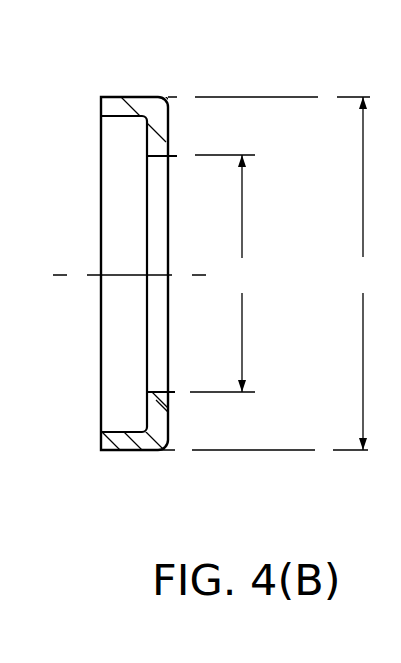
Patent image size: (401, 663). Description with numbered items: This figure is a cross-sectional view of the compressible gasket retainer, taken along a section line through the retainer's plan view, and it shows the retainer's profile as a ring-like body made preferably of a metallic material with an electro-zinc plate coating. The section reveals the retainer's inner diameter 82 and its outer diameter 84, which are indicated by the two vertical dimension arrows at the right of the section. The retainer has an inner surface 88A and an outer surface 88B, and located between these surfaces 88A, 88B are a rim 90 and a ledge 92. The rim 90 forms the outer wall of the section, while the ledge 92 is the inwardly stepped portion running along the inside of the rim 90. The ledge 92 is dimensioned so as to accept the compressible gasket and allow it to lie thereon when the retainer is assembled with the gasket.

The inner diameter 82 is at (225, 273).
The outer diameter 84 is at (240, 273).
The inner surface 88A is at (150, 158).
The outer surface 88B is at (127, 97).
The rim 90 is at (102, 110).
The ledge 92 is at (147, 125).